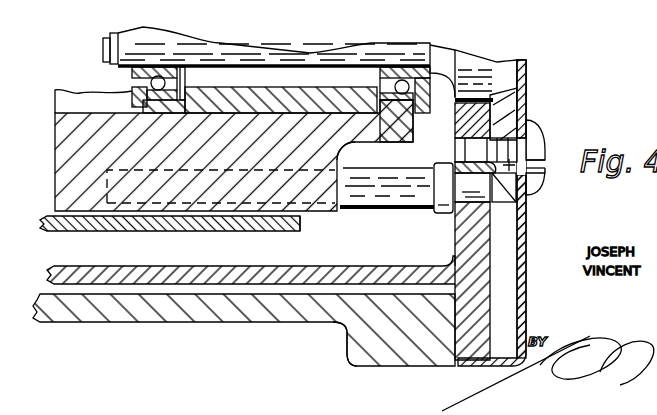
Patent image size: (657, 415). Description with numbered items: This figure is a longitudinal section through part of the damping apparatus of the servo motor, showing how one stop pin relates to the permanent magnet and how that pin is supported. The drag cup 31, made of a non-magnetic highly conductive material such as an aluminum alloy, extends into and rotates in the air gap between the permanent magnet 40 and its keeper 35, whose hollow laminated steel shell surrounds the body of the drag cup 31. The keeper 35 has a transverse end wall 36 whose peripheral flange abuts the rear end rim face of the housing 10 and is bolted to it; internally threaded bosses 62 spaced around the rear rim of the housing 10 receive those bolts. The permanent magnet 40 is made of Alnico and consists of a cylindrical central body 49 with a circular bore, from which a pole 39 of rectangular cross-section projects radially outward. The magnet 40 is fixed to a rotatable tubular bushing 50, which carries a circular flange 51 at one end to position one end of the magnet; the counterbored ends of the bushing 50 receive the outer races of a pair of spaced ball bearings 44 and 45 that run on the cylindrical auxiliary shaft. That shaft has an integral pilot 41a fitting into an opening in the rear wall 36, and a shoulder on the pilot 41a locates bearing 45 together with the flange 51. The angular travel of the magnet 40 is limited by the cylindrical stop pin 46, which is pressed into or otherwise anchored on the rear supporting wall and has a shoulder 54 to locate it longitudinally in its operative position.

The housing 10 is at (197, 318).
The drag cup 31 is at (134, 221).
The keeper 35 is at (232, 266).
The end wall 36 is at (455, 241).
The pole 39 is at (322, 215).
The permanent magnet 40 is at (55, 135).
The pilot 41a is at (470, 63).
The ball bearing 44 is at (130, 90).
The ball bearing 45 is at (390, 68).
The stop pin 46 is at (352, 210).
The central body 49 is at (357, 146).
The bushing 50 is at (253, 90).
The flange 51 is at (413, 128).
The shoulder 54 is at (443, 194).
The boss 62 is at (357, 360).